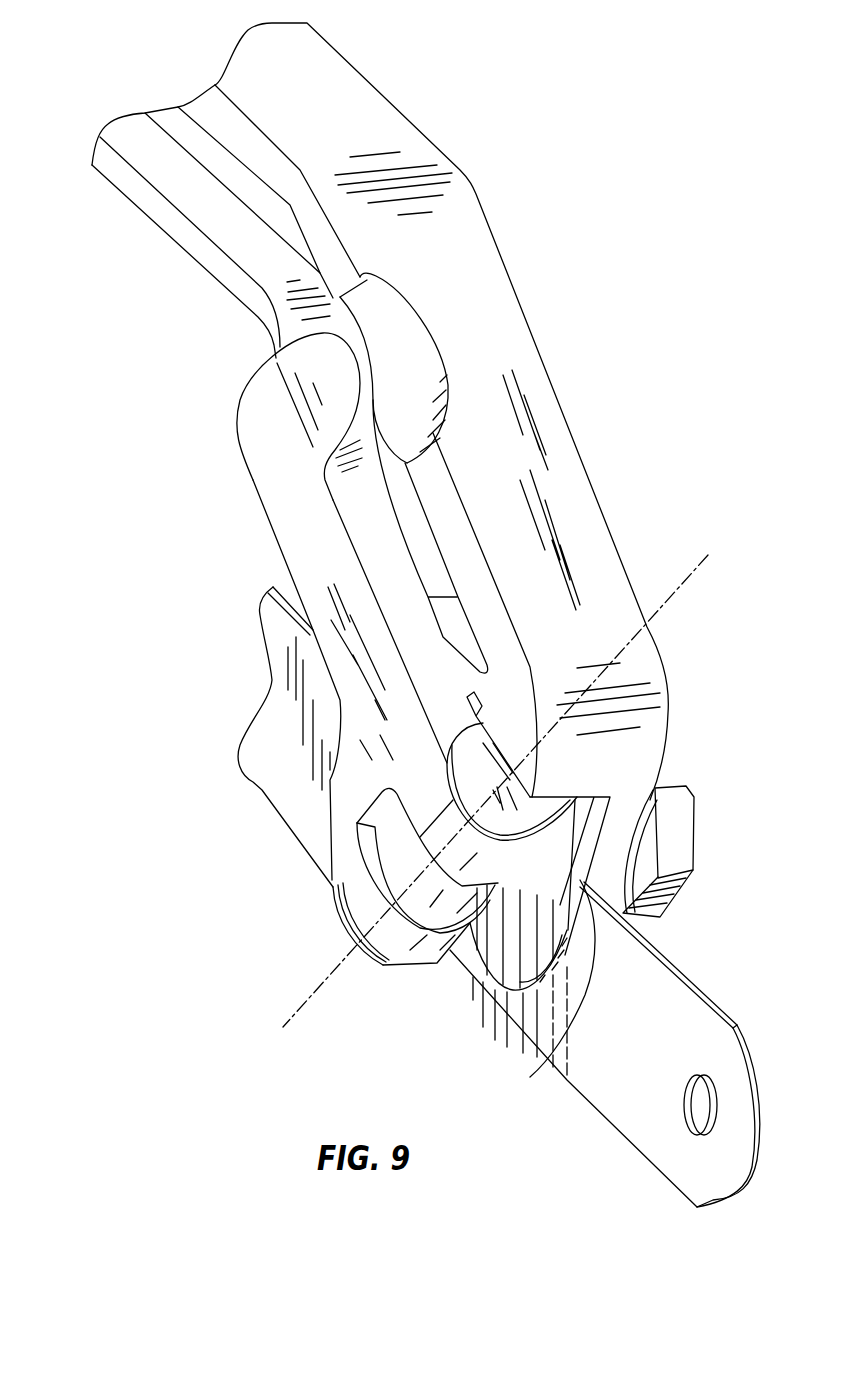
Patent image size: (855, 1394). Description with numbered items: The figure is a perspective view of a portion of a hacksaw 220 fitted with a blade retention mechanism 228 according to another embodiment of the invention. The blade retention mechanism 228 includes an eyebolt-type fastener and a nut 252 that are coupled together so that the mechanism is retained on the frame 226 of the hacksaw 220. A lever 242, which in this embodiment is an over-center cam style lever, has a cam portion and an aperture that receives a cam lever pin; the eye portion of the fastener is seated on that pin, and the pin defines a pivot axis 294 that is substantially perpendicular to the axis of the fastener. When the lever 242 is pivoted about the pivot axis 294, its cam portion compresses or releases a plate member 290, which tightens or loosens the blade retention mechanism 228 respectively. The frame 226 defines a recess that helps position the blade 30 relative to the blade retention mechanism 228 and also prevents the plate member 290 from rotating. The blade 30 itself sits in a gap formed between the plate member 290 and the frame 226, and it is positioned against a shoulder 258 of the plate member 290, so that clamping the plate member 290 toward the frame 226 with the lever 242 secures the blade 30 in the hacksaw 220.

The blade 30 is at (616, 1153).
The hacksaw 220 is at (513, 168).
The frame 226 is at (150, 244).
The blade retention mechanism 228 is at (206, 840).
The lever 242 is at (270, 477).
The nut 252 is at (678, 825).
The shoulder 258 is at (560, 1050).
The plate member 290 is at (513, 955).
The pivot axis 294 is at (668, 603).